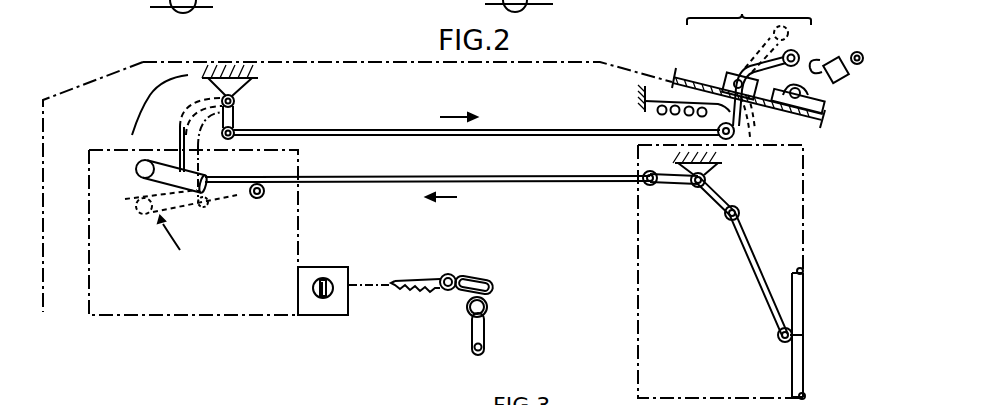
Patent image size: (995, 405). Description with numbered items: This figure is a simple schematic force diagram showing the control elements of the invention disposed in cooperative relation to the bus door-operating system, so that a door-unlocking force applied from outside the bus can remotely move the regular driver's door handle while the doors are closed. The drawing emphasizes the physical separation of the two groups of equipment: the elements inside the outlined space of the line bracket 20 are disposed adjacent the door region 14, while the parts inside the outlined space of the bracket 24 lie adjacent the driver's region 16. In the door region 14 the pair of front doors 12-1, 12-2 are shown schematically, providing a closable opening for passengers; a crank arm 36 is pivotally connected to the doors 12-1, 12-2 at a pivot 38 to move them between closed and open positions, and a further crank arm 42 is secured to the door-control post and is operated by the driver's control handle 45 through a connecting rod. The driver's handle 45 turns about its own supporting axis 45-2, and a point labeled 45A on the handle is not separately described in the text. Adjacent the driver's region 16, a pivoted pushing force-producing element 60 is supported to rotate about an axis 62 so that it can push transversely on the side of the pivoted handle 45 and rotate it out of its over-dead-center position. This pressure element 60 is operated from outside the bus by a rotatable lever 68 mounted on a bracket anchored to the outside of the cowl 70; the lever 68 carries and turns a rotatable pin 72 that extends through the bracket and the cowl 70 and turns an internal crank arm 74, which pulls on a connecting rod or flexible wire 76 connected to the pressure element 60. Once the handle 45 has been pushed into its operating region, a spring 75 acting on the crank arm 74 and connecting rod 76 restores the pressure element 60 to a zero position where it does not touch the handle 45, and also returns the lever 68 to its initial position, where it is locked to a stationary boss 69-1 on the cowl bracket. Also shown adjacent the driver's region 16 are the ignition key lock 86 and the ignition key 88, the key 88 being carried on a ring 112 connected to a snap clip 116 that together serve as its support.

The front door 12-1 is at (802, 298).
The front door 12-2 is at (832, 359).
The door region 14 is at (637, 278).
The driver's region 16 is at (303, 165).
The line bracket 20 is at (756, 56).
The bracket 24 is at (170, 136).
The crank arm 36 is at (747, 253).
The pivot 38 is at (782, 343).
The crank arm 42 is at (672, 187).
The driver's control handle 45 is at (143, 172).
The handle pivot axis 45-2 is at (260, 195).
The pivot 45A is at (210, 200).
The pushing force-producing element 60 is at (153, 147).
The axis 62 is at (234, 101).
The rotatable lever 68 is at (797, 50).
The stationary boss 69-1 is at (849, 74).
The cowl 70 is at (107, 73).
The rotatable pin 72 is at (737, 80).
The internal crank arm 74 is at (735, 117).
The spring 75 is at (668, 113).
The connecting rod or flexible wire 76 is at (375, 129).
The ignition key lock 86 is at (320, 266).
The ignition key 88 is at (412, 278).
The ring 112 is at (482, 279).
The snap clip 116 is at (473, 326).